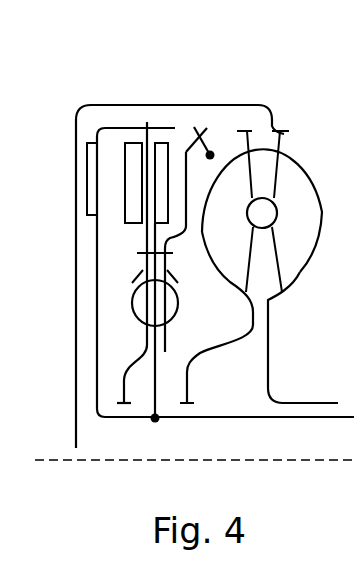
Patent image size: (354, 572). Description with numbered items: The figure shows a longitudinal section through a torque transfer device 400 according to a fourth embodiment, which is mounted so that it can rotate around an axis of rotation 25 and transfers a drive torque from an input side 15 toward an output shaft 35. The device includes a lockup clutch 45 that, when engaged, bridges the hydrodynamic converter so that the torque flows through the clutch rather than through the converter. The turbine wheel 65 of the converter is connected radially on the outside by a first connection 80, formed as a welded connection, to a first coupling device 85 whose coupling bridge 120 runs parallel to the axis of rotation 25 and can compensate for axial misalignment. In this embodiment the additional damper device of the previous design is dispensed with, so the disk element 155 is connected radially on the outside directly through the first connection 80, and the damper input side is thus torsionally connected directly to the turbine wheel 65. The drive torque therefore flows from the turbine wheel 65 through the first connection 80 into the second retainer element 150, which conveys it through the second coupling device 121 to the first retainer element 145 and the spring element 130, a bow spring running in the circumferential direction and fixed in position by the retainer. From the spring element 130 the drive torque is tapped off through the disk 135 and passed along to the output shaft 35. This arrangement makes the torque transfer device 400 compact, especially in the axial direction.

The torque transfer device 400 is at (99, 89).
The coupling bridge 120 is at (104, 126).
The first coupling device 85 is at (134, 117).
The first connection 80 is at (210, 151).
The turbine wheel 65 is at (222, 145).
The lockup clutch 45 is at (72, 128).
The disk element 155 is at (167, 237).
The second coupling device 121 is at (126, 255).
The first retainer element 145 is at (145, 345).
The second retainer element 150 is at (166, 336).
The spring element 130 is at (178, 302).
The input side 15 is at (291, 400).
The disk 135 is at (157, 415).
The output shaft 35 is at (268, 418).
The axis of rotation 25 is at (68, 462).